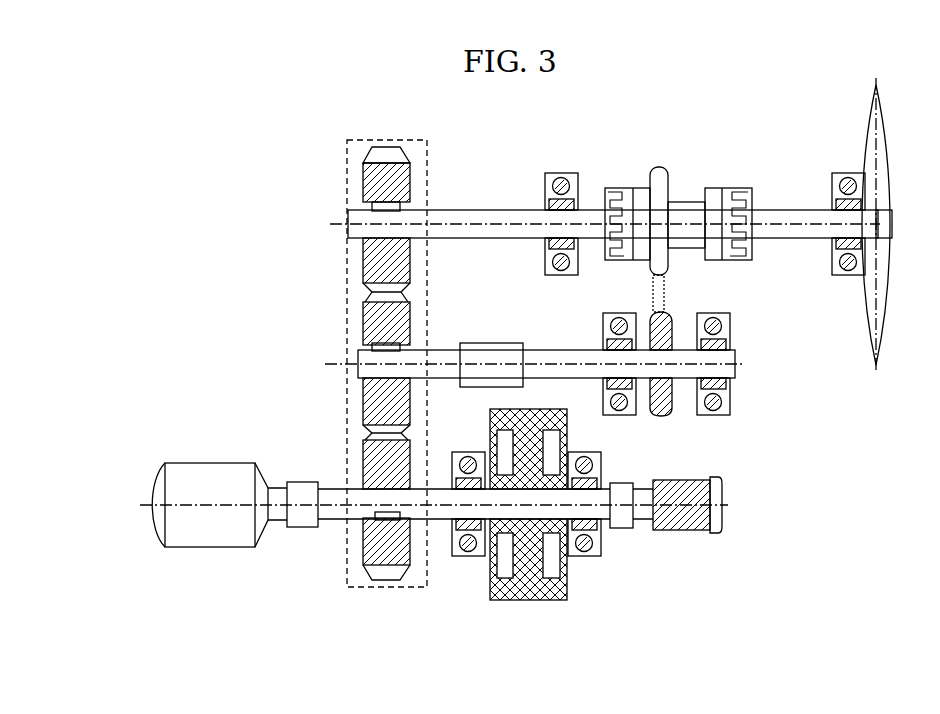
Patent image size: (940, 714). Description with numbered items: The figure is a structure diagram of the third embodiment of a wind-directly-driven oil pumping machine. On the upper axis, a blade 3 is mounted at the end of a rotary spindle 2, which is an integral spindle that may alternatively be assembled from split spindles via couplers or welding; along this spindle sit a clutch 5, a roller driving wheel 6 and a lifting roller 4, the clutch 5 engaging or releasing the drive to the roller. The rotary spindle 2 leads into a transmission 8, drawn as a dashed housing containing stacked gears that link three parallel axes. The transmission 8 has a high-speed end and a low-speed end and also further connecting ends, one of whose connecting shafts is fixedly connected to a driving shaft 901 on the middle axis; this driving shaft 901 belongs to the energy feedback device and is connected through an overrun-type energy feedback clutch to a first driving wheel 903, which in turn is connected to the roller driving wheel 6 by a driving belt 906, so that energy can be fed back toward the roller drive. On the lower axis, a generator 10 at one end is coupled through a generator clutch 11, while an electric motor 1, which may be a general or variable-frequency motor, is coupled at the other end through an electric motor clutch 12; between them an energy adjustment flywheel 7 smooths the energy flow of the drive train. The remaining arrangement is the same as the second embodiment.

The electric motor 1 is at (687, 532).
The rotary spindle 2 is at (780, 210).
The blade 3 is at (886, 140).
The lifting roller 4 is at (685, 205).
The clutch 5 is at (612, 192).
The roller driving wheel 6 is at (663, 173).
The energy adjustment flywheel 7 is at (535, 598).
The transmission 8 is at (352, 302).
The generator 10 is at (185, 463).
The generator clutch 11 is at (303, 522).
The electric motor clutch 12 is at (619, 530).
The driving shaft 901 is at (562, 355).
The first driving wheel 903 is at (672, 330).
The driving belt 906 is at (648, 298).